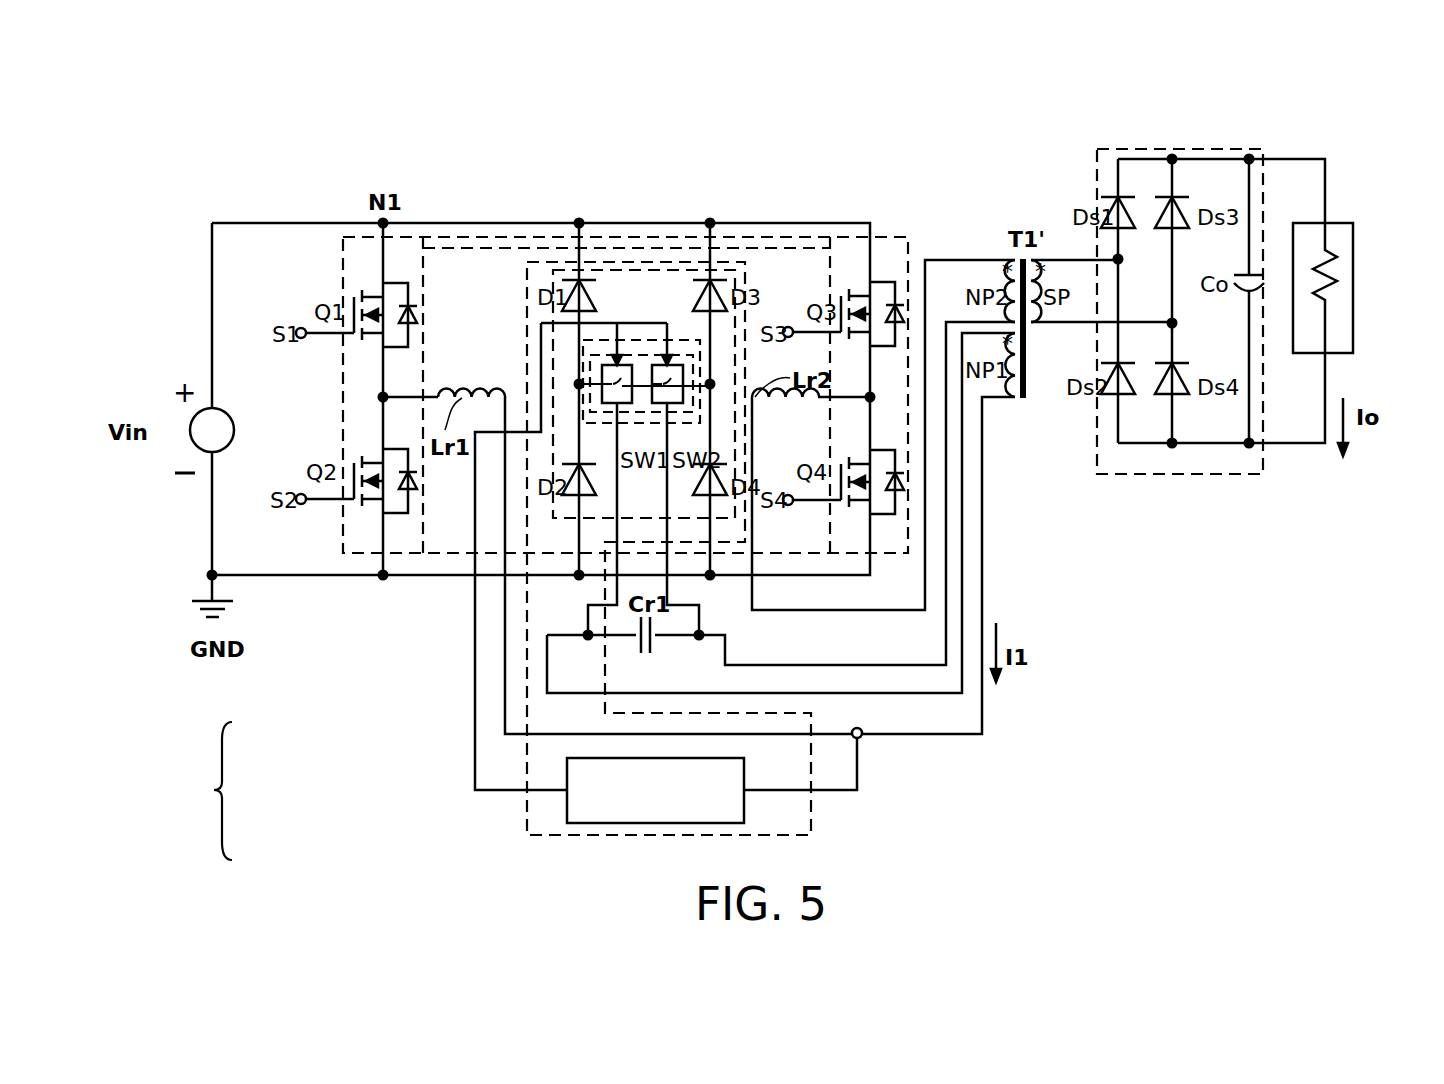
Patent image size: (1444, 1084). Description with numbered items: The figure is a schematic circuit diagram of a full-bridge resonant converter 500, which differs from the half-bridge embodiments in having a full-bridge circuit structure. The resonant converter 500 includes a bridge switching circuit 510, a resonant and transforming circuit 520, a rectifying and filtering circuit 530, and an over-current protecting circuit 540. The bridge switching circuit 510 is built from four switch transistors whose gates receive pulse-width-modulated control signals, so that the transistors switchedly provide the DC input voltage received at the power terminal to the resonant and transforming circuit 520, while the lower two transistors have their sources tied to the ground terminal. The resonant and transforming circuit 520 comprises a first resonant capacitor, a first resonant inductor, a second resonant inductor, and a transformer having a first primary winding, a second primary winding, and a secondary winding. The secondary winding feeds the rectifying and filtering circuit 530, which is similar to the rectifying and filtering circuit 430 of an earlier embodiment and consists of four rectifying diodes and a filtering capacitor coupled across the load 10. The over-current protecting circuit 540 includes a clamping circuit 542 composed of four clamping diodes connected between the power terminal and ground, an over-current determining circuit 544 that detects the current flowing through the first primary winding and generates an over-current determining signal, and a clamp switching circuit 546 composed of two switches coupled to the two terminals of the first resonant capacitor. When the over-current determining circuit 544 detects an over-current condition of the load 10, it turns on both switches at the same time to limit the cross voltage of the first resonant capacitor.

The load 10 is at (1353, 262).
The rectifying and filtering circuit 430 is at (1160, 477).
The resonant converter 500 is at (1302, 781).
The bridge switching circuit 510 is at (886, 236).
The resonant and transforming circuit 520 is at (223, 791).
The rectifying and filtering circuit 530 is at (1222, 149).
The over-current protecting circuit 540 is at (527, 808).
The clamping circuit 542 is at (553, 350).
The over-current determining circuit 544 is at (744, 803).
The clamp switching circuit 546 is at (643, 355).